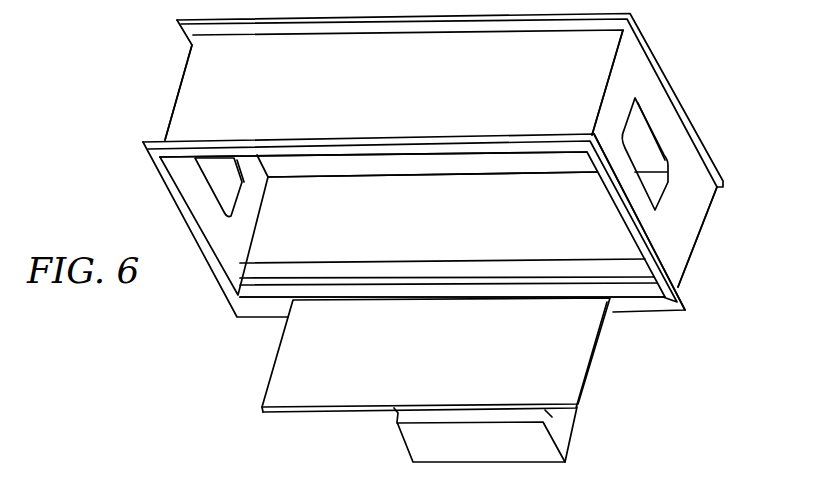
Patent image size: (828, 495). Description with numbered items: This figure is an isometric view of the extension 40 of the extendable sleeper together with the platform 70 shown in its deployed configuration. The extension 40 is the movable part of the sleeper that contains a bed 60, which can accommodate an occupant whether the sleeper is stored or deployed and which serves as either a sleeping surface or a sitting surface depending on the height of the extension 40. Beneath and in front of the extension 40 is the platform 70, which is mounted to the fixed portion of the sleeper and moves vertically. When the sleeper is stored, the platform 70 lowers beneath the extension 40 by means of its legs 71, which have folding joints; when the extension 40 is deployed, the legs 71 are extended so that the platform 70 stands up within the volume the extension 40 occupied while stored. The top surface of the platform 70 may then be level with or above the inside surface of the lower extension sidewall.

The extension 40 is at (139, 52).
The bed 60 is at (471, 226).
The platform 70 is at (451, 365).
The legs 71 is at (404, 443).